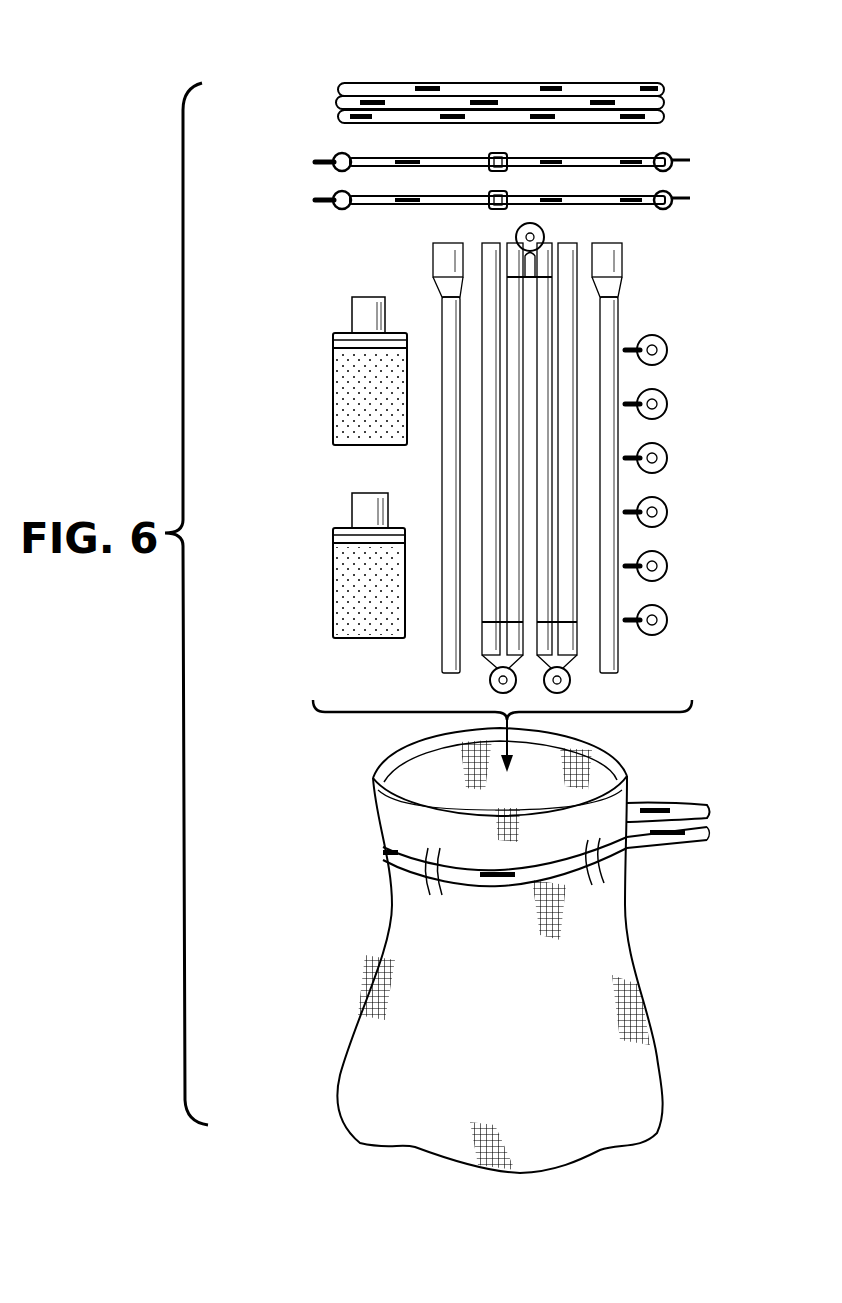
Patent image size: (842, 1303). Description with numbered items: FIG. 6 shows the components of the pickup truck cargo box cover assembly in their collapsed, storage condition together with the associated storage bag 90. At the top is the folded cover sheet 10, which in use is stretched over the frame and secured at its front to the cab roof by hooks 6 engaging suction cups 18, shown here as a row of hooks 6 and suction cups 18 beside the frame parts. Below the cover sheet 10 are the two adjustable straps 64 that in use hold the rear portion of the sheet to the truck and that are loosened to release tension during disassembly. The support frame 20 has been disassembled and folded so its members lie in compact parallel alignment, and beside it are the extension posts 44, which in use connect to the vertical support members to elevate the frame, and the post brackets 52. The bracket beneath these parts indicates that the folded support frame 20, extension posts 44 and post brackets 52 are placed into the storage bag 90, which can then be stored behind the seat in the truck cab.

The cover sheet 10 is at (668, 105).
The straps 64 is at (690, 160).
The support frame 20 is at (568, 240).
The extension posts 44 is at (440, 258).
The hooks 6 is at (674, 473).
The suction cups 18 is at (668, 350).
The post brackets 52 is at (331, 340).
The storage bag 90 is at (603, 972).